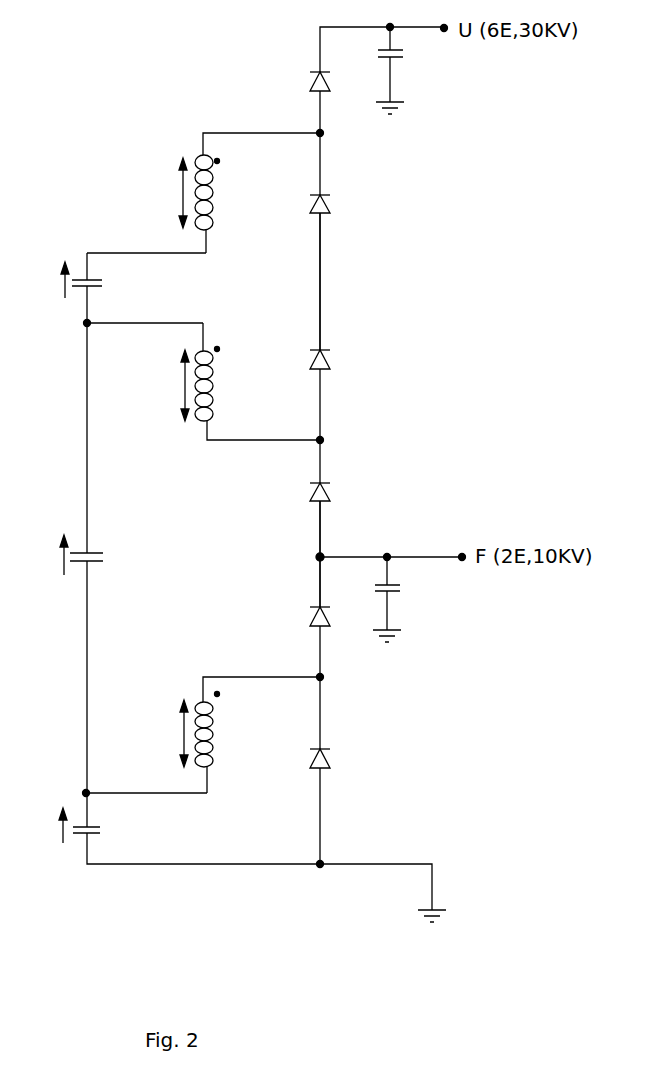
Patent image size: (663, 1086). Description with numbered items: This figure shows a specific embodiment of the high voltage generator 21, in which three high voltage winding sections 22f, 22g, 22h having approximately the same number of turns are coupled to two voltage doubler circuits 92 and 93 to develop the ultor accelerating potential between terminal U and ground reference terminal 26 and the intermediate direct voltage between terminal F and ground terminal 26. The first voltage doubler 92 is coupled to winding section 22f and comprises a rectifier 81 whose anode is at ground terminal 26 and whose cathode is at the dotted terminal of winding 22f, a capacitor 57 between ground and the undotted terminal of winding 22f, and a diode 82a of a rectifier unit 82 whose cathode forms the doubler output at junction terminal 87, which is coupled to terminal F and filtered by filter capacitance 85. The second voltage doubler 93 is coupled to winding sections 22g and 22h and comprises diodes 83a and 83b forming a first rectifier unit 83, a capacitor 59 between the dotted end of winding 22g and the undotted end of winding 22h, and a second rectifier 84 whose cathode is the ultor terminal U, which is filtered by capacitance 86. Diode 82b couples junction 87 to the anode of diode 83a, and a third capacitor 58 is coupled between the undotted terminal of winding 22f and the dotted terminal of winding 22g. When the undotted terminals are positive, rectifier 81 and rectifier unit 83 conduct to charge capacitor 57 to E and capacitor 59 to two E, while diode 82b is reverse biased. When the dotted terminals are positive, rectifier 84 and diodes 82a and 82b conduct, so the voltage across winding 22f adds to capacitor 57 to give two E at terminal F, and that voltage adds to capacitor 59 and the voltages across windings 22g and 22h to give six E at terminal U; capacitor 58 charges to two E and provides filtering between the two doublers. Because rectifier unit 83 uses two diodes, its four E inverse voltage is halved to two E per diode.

The voltage multiplier circuit 21 is at (471, 345).
The high voltage winding section 22f is at (213, 735).
The high voltage winding section 22g is at (213, 388).
The high voltage winding section 22h is at (213, 195).
The ground reference terminal 26 is at (398, 116).
The capacitor 57 is at (104, 834).
The capacitor 58 is at (104, 560).
The capacitor 59 is at (103, 287).
The rectifier 81 is at (330, 758).
The rectifier unit 82 is at (285, 565).
The diode 82a is at (310, 619).
The diode 82b is at (330, 495).
The rectifier unit 83 is at (385, 303).
The diode 83a is at (330, 362).
The diode 83b is at (330, 206).
The rectifier 84 is at (313, 80).
The filter capacitance 85 is at (399, 593).
The filter capacitance 86 is at (402, 60).
The junction terminal 87 is at (324, 553).
The voltage doubler 92 is at (281, 822).
The voltage doubler 93 is at (268, 303).